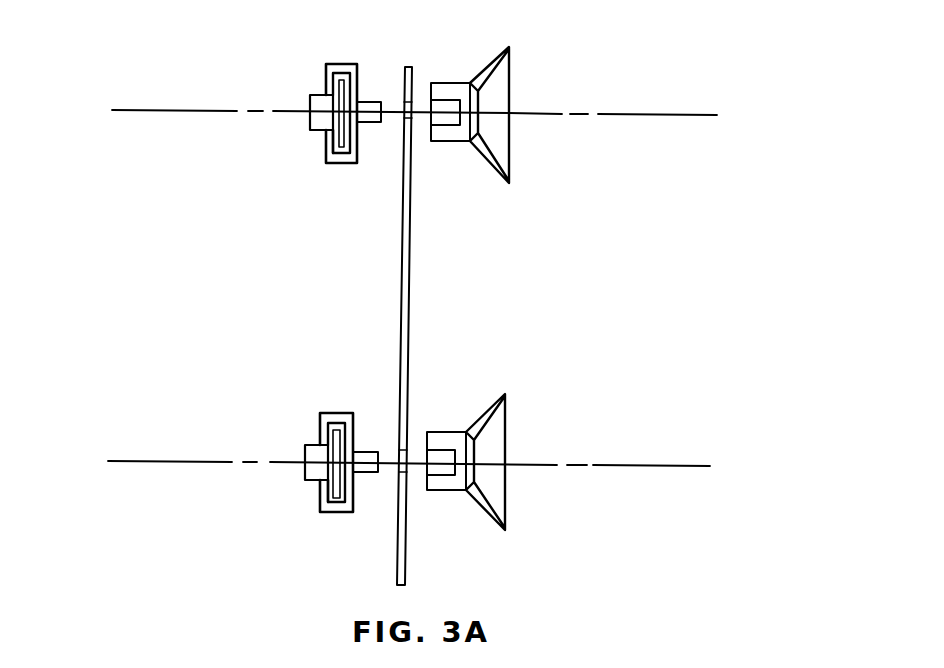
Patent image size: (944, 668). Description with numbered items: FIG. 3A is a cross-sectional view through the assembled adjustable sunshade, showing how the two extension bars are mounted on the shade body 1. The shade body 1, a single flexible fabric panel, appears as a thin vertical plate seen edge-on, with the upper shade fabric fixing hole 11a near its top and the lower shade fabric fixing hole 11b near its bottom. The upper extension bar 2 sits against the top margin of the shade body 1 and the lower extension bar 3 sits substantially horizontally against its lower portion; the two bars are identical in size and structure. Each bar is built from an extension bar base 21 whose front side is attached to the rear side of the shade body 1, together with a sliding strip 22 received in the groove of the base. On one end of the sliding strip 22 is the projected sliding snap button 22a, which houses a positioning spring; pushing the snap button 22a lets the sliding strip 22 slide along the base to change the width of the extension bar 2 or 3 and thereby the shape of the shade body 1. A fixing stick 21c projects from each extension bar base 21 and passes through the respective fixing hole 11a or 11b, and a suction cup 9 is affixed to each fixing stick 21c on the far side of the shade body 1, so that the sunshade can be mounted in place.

The shade body 1 is at (415, 278).
The upper shade fabric fixing hole 11a is at (413, 110).
The lower shade fabric fixing hole 11b is at (405, 466).
The upper extension bar 2 is at (325, 74).
The lower extension bar 3 is at (320, 422).
The extension bar base 21 is at (359, 79).
The fixing stick 21c is at (368, 124).
The sliding strip 22 is at (337, 145).
The sliding snap button 22a is at (318, 122).
The suction cup 9 is at (492, 90).